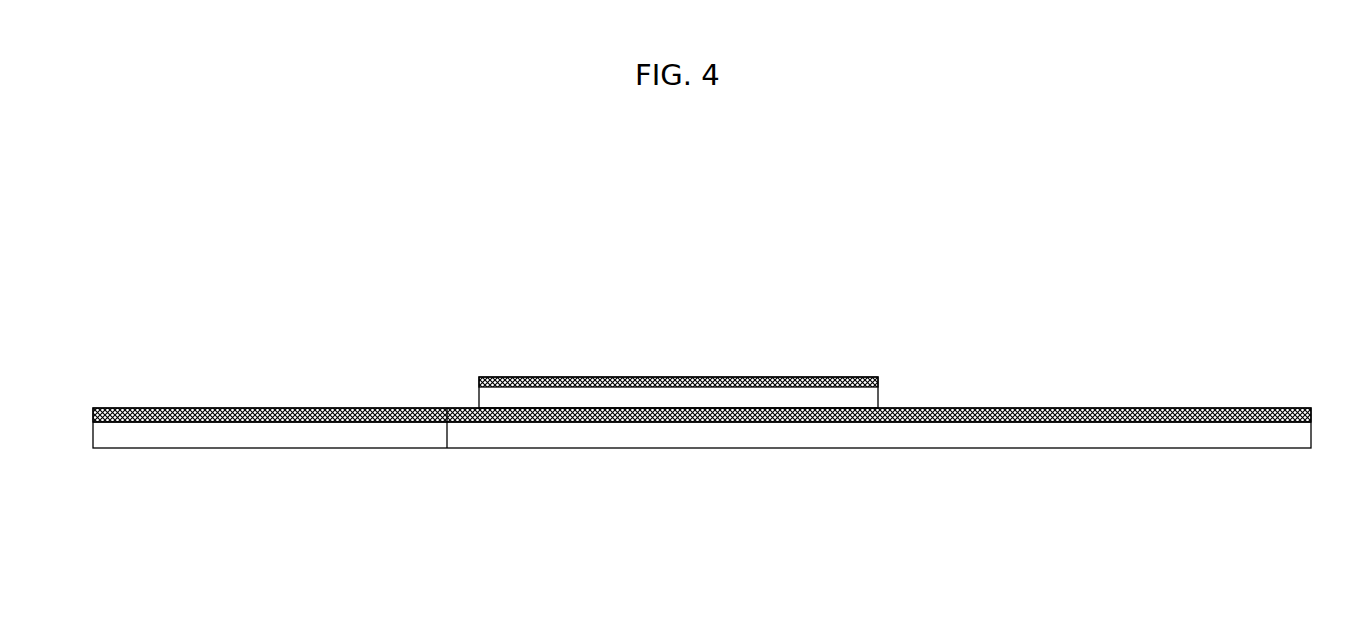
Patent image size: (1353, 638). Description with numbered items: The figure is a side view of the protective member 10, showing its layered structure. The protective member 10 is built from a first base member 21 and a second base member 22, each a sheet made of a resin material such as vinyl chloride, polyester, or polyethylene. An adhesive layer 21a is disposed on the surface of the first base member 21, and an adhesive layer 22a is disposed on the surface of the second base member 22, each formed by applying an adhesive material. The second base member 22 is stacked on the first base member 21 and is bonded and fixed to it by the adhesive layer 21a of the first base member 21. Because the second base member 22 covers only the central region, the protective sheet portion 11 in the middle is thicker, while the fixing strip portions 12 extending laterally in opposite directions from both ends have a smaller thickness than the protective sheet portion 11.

The protective member 10 is at (424, 330).
The protective sheet portion 11 is at (513, 448).
The fixing strip portion 12 is at (198, 448).
The first base member 21 is at (906, 435).
The adhesive layer 21a is at (1008, 408).
The second base member 22 is at (880, 397).
The adhesive layer 22a is at (787, 377).